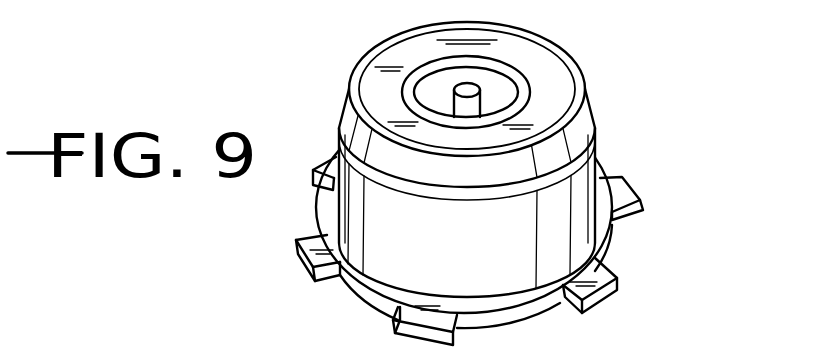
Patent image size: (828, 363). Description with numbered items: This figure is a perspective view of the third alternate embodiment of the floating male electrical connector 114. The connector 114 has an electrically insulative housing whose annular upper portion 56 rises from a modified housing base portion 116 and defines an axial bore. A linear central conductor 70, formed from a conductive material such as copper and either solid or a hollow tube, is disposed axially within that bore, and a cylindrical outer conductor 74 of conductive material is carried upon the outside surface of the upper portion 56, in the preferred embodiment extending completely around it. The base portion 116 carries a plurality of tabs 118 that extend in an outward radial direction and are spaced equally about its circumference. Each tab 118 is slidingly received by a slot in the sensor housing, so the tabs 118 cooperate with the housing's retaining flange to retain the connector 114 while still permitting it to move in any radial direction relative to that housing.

The male connector 114 is at (697, 121).
The cylindrical outer conductor 74 is at (557, 55).
The annular upper portion 56 is at (566, 98).
The central conductor 70 is at (467, 112).
The housing base portion 116 is at (612, 247).
The tabs 118 is at (618, 200).